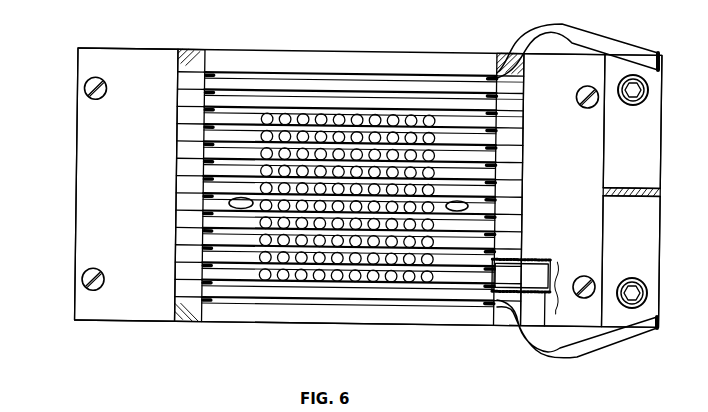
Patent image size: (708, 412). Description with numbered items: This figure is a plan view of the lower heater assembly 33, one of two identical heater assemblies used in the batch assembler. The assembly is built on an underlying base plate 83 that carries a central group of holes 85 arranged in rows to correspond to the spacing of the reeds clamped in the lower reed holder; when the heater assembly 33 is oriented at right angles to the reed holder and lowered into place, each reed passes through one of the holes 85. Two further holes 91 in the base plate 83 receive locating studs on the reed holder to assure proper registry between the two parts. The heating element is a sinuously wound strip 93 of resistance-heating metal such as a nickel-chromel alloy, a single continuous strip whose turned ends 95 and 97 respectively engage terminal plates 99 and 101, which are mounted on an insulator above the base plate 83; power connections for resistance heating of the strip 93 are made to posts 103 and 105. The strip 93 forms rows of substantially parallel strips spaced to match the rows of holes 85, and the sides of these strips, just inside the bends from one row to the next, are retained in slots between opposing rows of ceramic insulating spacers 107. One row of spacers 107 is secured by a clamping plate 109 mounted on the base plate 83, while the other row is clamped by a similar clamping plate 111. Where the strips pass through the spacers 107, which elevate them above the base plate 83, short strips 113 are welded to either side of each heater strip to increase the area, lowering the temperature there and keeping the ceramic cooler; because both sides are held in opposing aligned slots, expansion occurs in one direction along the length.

The heater assembly 33 is at (75, 190).
The base plate 83 is at (295, 318).
The holes 85 is at (415, 116).
The holes 91 is at (229, 203).
The strip 93 is at (450, 300).
The turned end 95 is at (638, 47).
The turned end 97 is at (641, 338).
The terminal plate 99 is at (650, 159).
The terminal plate 101 is at (657, 220).
The post 103 is at (619, 83).
The post 105 is at (637, 280).
The ceramic insulating spacers 107 is at (183, 222).
The clamping plate 109 is at (594, 134).
The clamping plate 111 is at (131, 175).
The short strips 113 is at (497, 225).